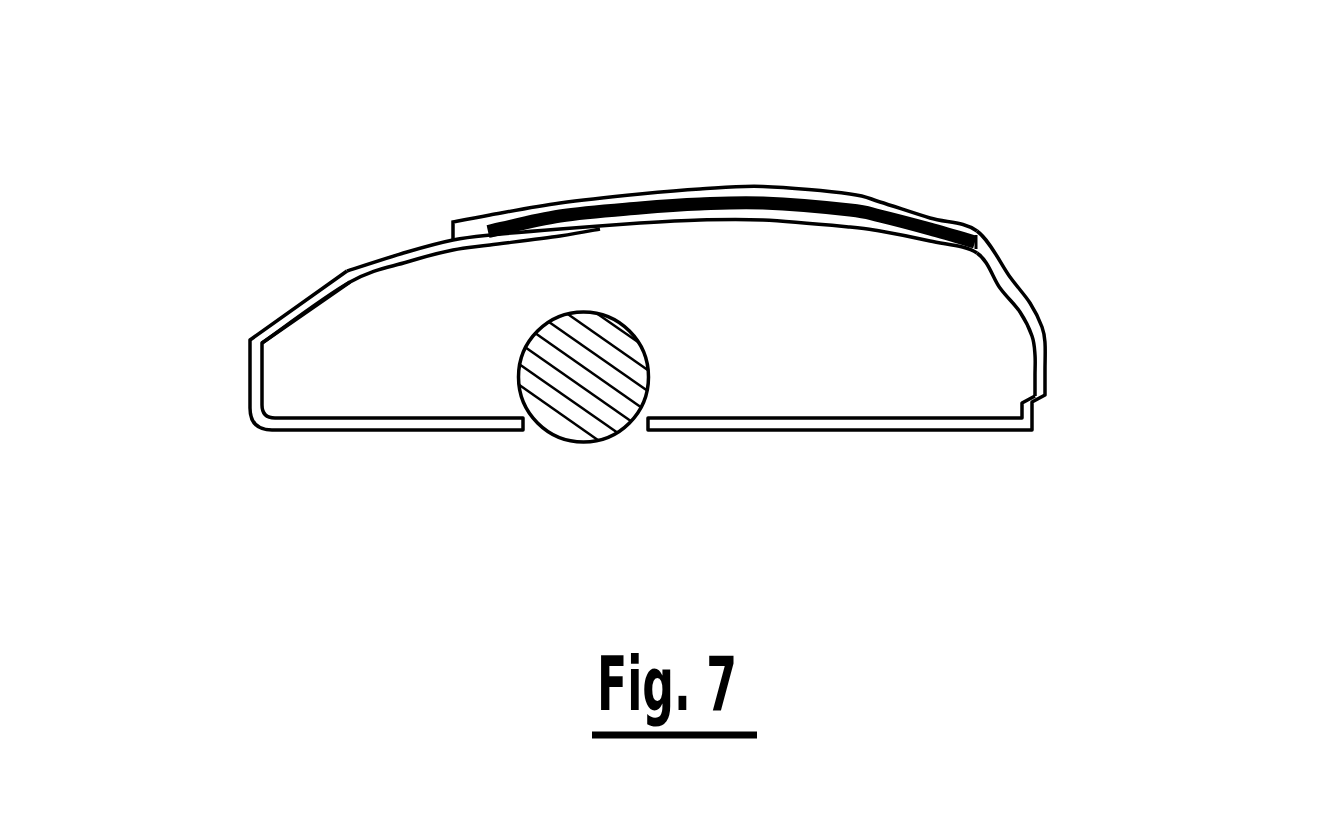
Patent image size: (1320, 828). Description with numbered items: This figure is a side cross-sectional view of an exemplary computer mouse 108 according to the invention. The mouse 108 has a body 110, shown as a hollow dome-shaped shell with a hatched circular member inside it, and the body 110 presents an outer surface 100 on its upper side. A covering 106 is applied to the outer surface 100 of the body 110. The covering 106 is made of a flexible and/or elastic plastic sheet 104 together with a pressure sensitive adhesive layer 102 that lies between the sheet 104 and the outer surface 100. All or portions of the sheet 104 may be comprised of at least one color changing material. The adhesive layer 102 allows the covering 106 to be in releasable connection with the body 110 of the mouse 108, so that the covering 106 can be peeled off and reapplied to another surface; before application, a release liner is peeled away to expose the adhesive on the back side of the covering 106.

The outer surface 100 is at (705, 281).
The pressure sensitive adhesive layer 102 is at (490, 230).
The plastic sheet 104 is at (602, 195).
The covering 106 is at (982, 242).
The mouse 108 is at (1087, 308).
The body 110 is at (282, 322).